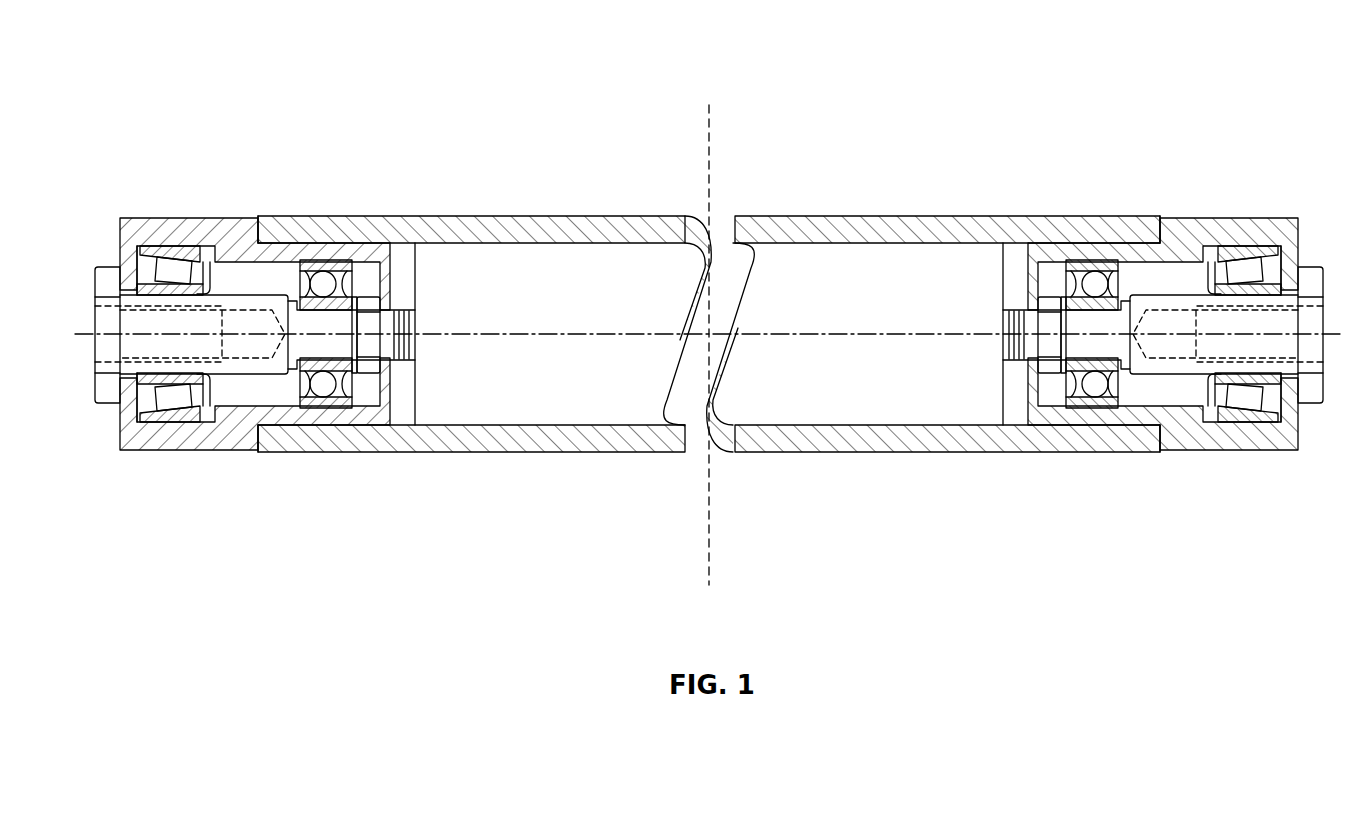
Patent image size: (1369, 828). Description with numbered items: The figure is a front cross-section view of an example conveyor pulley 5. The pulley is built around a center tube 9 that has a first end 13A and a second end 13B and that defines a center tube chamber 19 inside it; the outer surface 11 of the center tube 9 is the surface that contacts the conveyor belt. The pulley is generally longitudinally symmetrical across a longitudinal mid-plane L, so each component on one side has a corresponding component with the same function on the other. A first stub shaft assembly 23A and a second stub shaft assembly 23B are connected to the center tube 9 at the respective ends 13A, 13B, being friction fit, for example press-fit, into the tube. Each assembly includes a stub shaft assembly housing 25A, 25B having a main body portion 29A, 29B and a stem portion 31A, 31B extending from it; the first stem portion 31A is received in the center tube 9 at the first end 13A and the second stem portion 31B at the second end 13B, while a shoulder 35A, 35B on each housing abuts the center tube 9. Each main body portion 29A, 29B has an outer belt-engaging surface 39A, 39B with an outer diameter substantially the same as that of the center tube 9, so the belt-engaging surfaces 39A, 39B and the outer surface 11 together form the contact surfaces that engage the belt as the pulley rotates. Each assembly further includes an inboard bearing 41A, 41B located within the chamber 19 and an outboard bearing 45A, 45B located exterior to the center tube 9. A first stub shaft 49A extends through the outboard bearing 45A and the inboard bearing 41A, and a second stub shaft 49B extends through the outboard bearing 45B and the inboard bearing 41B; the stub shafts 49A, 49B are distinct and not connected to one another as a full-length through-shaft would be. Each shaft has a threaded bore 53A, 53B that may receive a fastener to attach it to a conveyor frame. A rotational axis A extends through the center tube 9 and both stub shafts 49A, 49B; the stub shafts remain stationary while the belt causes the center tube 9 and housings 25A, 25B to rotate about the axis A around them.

The conveyor pulley 5 is at (315, 124).
The center tube 9 is at (475, 230).
The outer surface 11 is at (470, 453).
The center tube chamber 19 is at (846, 285).
The longitudinal mid-plane L is at (712, 148).
The rotational axis A is at (823, 340).
The first end 13A is at (245, 232).
The second end 13B is at (1172, 232).
The first stub shaft assembly 23A is at (96, 455).
The second stub shaft assembly 23B is at (1293, 472).
The stub shaft assembly housing 25A is at (167, 440).
The stub shaft assembly housing 25B is at (1233, 440).
The main body portion 29A is at (228, 233).
The main body portion 29B is at (1191, 233).
The first stem portion 31A is at (303, 427).
The second stem portion 31B is at (1100, 418).
The shoulder 35A is at (260, 440).
The shoulder 35B is at (1157, 433).
The belt-engaging surface 39A is at (212, 448).
The belt-engaging surface 39B is at (1193, 447).
The inboard bearing 41A is at (323, 283).
The inboard bearing 41B is at (1095, 283).
The outboard bearing 45A is at (118, 266).
The outboard bearing 45B is at (1290, 402).
The first stub shaft 49A is at (263, 302).
The second stub shaft 49B is at (1155, 302).
The threaded bore 53A is at (147, 396).
The threaded bore 53B is at (1247, 333).